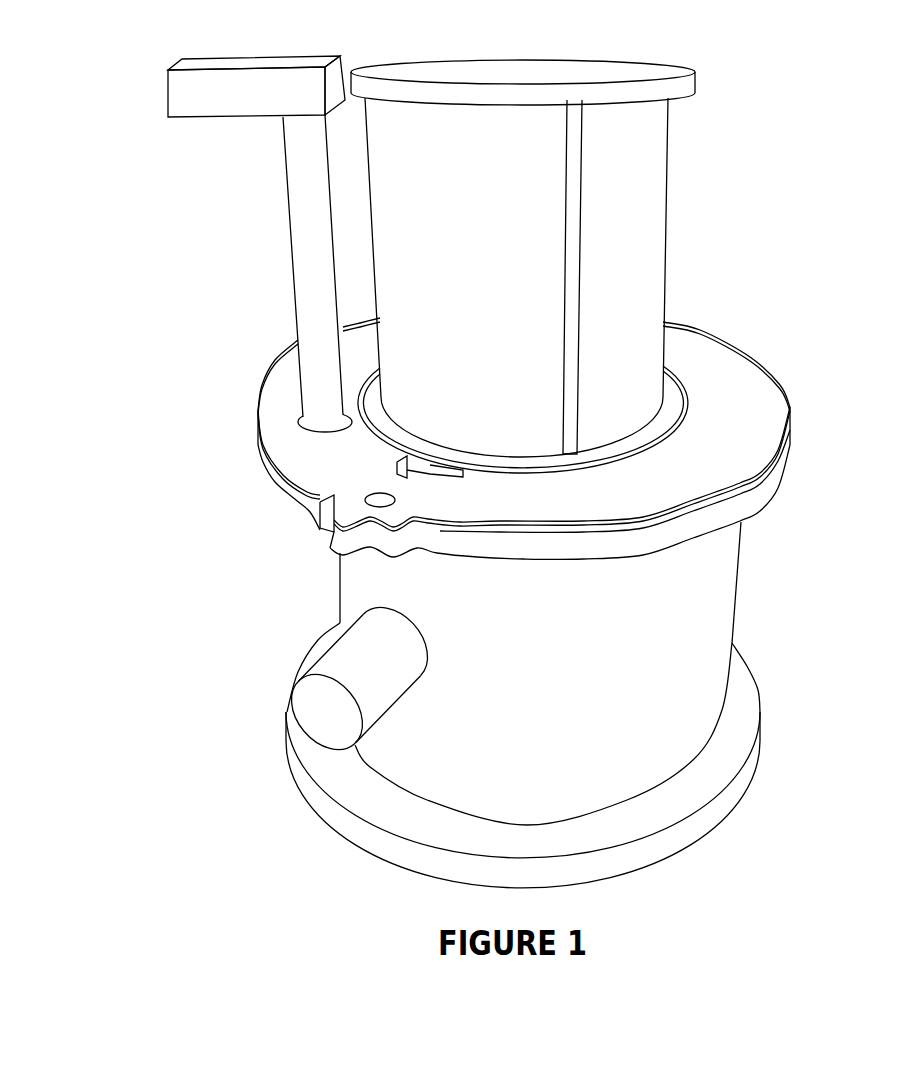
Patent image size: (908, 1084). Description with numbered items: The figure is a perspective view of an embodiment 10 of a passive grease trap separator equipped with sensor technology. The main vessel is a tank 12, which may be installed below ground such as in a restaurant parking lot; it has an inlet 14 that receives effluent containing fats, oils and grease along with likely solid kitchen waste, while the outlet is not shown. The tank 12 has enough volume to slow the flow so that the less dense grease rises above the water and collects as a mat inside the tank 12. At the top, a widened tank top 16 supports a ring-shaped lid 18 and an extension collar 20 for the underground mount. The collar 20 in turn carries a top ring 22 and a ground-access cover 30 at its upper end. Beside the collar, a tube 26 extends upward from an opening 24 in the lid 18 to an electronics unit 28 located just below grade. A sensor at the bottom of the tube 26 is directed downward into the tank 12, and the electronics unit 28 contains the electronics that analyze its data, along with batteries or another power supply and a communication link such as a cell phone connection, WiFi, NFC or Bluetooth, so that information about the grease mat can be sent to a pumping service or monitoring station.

The separator embodiment 10 is at (822, 203).
The tank 12 is at (700, 598).
The inlet 14 is at (337, 662).
The widened tank top 16 is at (750, 490).
The ring-shaped lid 18 is at (717, 378).
The extension collar 20 is at (653, 222).
The top ring 22 is at (695, 85).
The opening 24 is at (296, 416).
The tube 26 is at (307, 268).
The electronics unit 28 is at (188, 97).
The ground-access cover 30 is at (645, 66).